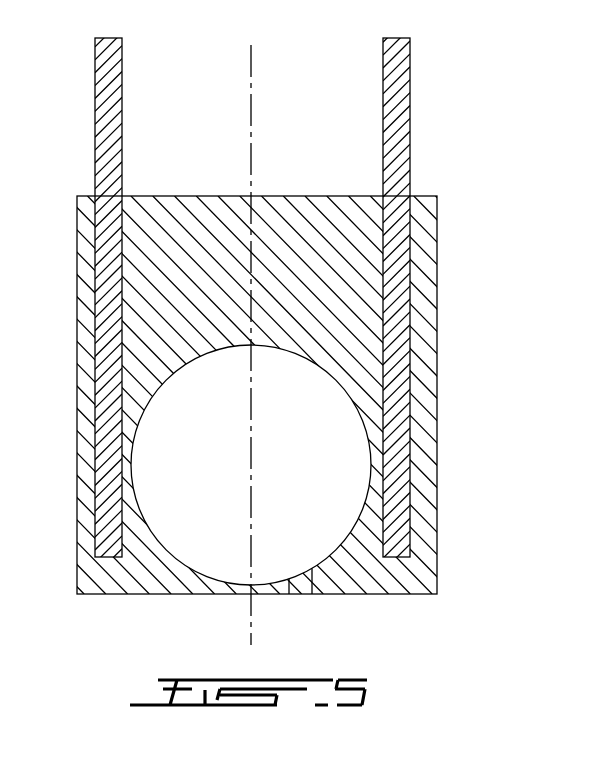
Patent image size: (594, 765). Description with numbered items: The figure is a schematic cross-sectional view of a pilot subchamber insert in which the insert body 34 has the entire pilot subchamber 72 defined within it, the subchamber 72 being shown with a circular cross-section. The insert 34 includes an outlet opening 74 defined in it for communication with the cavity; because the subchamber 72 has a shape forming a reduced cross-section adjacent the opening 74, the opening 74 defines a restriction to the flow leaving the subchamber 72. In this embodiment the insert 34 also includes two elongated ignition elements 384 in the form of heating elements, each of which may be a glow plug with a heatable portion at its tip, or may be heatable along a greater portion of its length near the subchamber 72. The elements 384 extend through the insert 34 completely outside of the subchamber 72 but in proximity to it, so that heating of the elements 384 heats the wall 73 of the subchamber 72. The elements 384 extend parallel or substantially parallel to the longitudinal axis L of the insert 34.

The insert body 34 is at (441, 196).
The elongated ignition elements 384 is at (398, 343).
The pilot subchamber 72 is at (321, 479).
The wall of the subchamber 73 is at (146, 519).
The outlet opening 74 is at (300, 587).
The longitudinal axis L is at (252, 110).